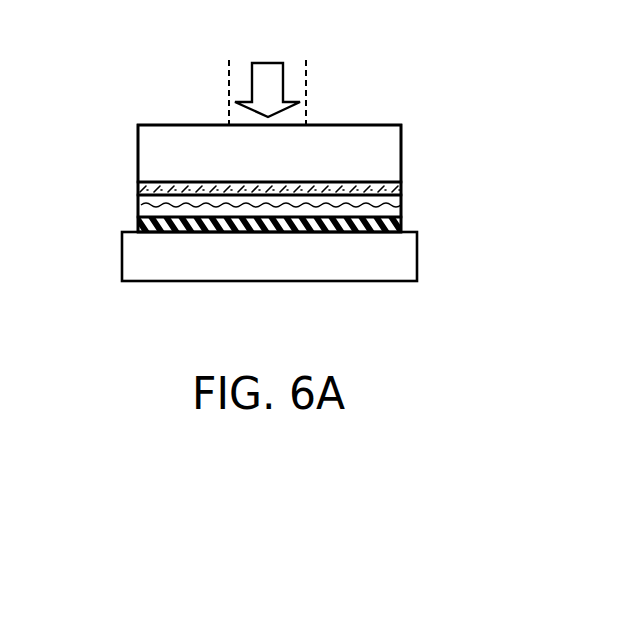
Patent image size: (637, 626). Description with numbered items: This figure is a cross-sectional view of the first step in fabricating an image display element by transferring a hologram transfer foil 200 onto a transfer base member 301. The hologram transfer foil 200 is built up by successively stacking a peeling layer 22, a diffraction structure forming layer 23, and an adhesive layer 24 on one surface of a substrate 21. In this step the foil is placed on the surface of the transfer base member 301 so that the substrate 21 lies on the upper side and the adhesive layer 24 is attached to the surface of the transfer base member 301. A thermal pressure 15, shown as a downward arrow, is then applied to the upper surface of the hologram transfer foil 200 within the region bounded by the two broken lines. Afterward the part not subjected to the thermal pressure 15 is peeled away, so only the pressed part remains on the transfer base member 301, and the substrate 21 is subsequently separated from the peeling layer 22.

The thermal pressure 15 is at (268, 71).
The hologram transfer foil 200 is at (382, 103).
The substrate 21 is at (148, 153).
The peeling layer 22 is at (398, 187).
The diffraction structure forming layer 23 is at (141, 204).
The adhesive layer 24 is at (138, 225).
The transfer base member 301 is at (388, 262).